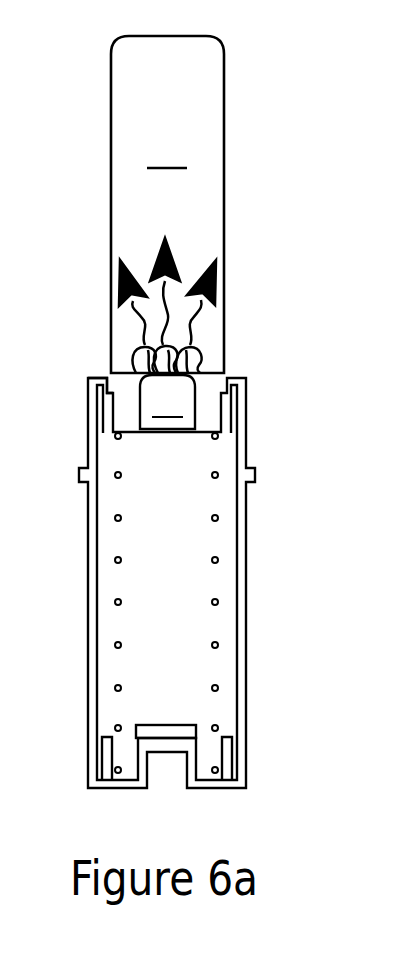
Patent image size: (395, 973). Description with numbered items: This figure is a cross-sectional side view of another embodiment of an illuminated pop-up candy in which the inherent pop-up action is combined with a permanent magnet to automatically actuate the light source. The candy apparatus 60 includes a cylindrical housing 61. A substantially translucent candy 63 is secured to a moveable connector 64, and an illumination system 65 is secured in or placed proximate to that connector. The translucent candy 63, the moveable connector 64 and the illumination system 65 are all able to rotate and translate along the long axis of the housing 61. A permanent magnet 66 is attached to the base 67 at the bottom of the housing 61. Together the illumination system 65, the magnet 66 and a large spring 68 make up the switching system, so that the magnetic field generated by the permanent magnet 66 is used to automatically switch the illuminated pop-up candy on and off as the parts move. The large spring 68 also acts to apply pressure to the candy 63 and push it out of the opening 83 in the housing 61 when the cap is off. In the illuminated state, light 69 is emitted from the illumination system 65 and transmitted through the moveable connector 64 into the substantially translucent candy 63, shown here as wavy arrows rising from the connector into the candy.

The candy apparatus 60 is at (226, 128).
The substantially translucent candy 63 is at (167, 148).
The light 69 is at (181, 270).
The opening 83 is at (103, 375).
The moveable connector 64 is at (207, 408).
The illumination system 65 is at (167, 404).
The cylindrical housing 61 is at (247, 540).
The large spring 68 is at (218, 561).
The permanent magnet 66 is at (170, 731).
The base 67 is at (200, 783).